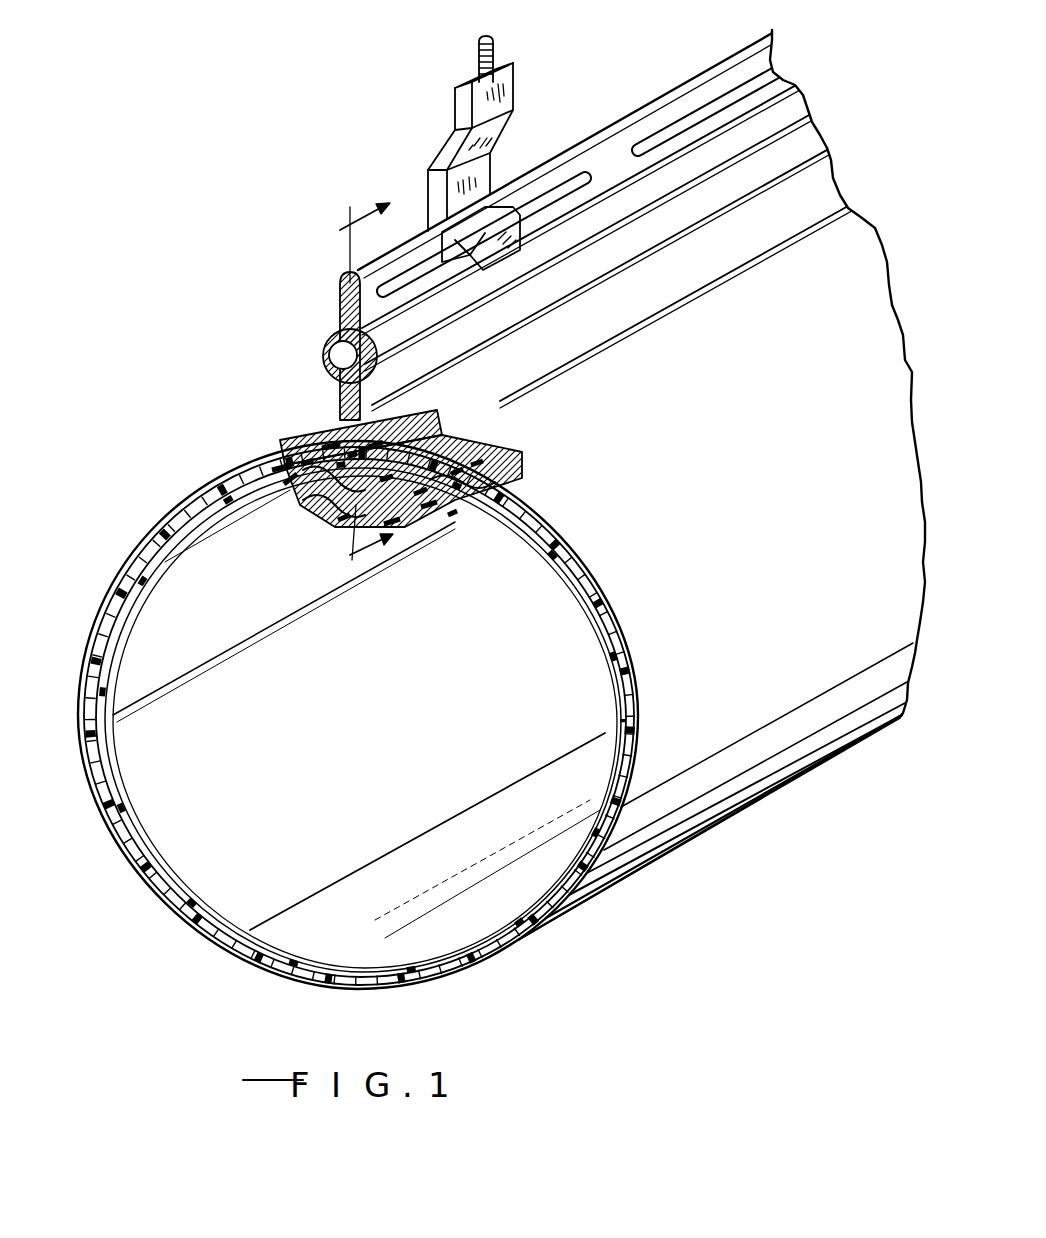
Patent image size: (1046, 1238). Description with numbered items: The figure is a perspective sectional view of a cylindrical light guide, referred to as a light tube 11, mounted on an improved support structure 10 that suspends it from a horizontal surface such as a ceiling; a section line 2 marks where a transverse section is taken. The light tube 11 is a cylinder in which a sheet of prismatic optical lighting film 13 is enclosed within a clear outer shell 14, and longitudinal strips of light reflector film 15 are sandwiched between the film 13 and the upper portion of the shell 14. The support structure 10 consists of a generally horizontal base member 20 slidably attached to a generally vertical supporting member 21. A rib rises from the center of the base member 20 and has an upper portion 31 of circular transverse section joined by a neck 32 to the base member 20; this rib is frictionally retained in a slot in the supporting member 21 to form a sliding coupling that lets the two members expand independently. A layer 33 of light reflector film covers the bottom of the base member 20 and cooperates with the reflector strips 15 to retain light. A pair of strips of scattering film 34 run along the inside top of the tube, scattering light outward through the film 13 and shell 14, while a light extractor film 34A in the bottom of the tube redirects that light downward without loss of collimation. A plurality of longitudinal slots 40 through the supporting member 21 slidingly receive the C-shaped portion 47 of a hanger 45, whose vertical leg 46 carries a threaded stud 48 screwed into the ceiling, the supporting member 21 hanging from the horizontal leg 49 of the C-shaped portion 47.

The structure for supporting a light guide 10 is at (198, 338).
The light guide 11 is at (188, 472).
The optical lighting film 13 is at (135, 621).
The outer shell 14 is at (113, 577).
The light reflector film 15 is at (163, 562).
The base member 20 is at (365, 413).
The supporting member 21 is at (388, 317).
The upper portion 31 is at (345, 352).
The neck 32 is at (338, 403).
The layer of light reflector film 33 is at (482, 520).
The scattering film 34 is at (313, 505).
The light extractor film 34A is at (402, 862).
The longitudinal slots 40 is at (577, 183).
The hangers 45 is at (453, 118).
The vertical leg 46 is at (510, 88).
The C-shaped portion 47 is at (480, 173).
The threaded stud 48 is at (495, 45).
The horizontal leg 49 is at (478, 262).
The section line 2 is at (346, 388).